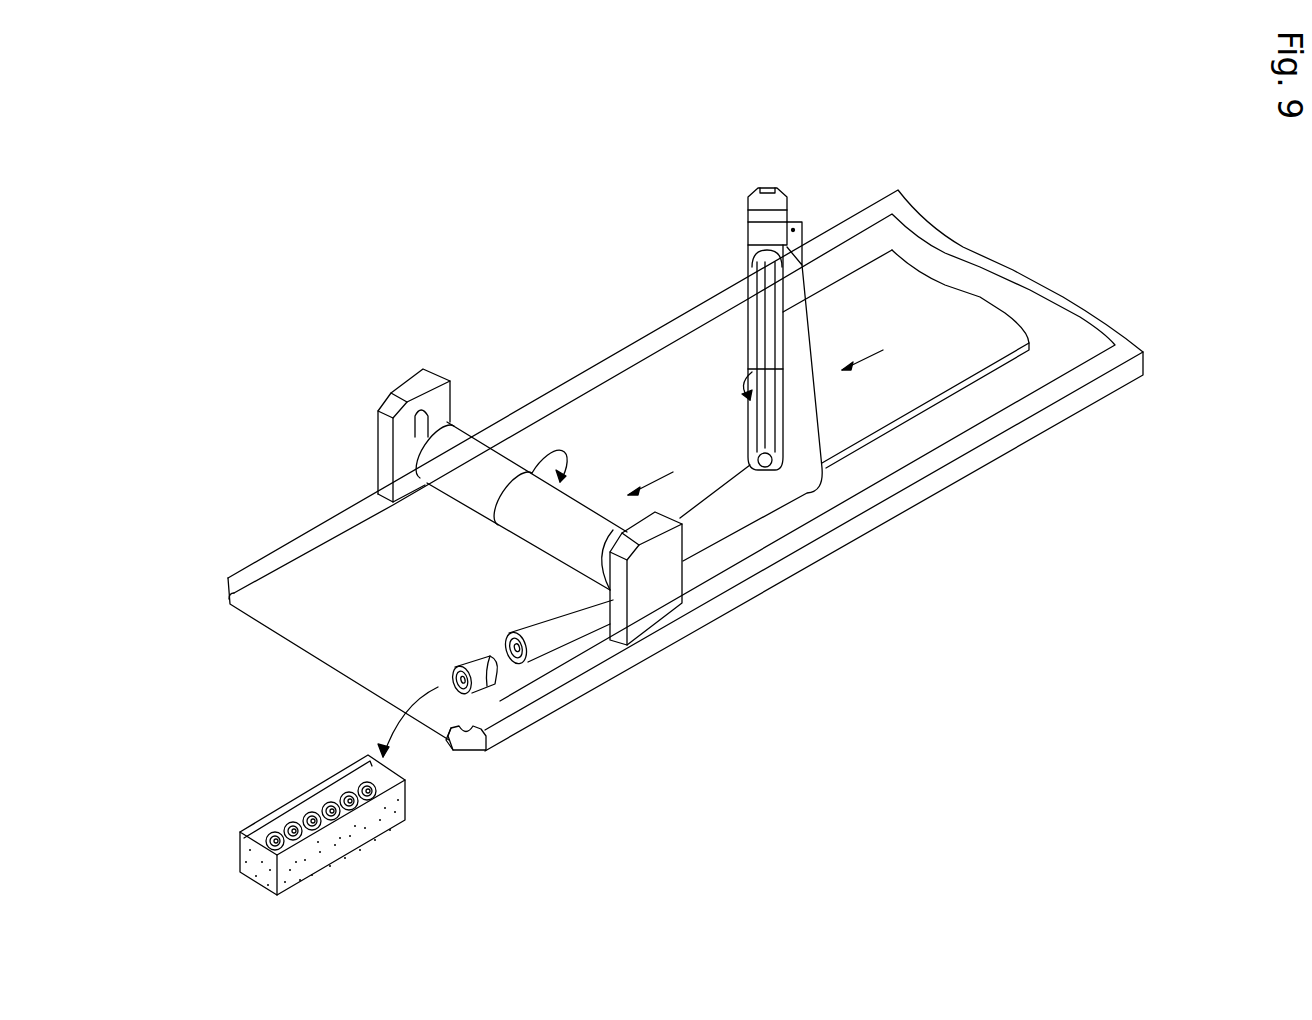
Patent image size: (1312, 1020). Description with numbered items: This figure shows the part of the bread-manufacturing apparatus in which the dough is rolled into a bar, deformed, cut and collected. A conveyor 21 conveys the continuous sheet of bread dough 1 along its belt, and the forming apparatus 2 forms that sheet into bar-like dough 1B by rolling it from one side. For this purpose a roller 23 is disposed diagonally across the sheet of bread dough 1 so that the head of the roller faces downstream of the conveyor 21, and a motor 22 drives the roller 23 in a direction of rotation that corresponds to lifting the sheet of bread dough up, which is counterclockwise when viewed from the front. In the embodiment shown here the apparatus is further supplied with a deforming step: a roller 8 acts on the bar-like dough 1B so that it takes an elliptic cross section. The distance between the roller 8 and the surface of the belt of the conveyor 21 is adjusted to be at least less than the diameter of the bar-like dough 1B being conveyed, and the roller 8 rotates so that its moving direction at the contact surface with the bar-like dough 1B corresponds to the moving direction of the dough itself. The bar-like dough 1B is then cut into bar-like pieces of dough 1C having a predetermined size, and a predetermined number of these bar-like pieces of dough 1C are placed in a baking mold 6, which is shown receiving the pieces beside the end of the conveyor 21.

The continuous sheet of bread dough 1 is at (920, 303).
The bar-like dough 1B is at (577, 623).
The bar-like pieces of dough 1C is at (480, 680).
The forming apparatus 2 is at (813, 202).
The baking mold 6 is at (243, 848).
The roller 8 is at (440, 472).
The conveyor 21 is at (600, 362).
The motor 22 is at (765, 235).
The roller 23 is at (765, 337).